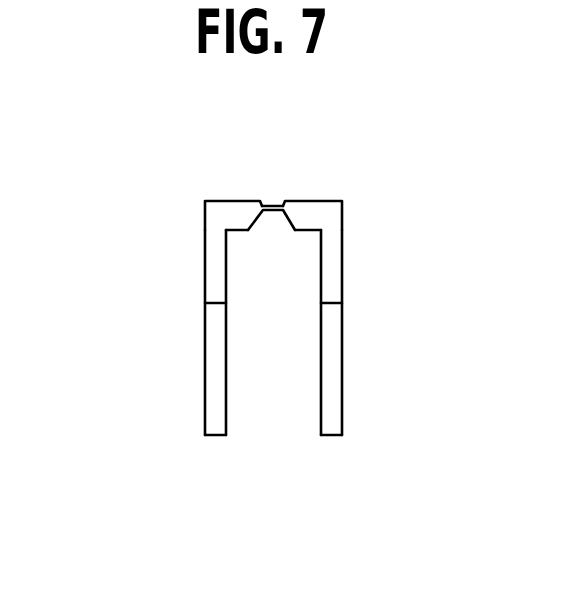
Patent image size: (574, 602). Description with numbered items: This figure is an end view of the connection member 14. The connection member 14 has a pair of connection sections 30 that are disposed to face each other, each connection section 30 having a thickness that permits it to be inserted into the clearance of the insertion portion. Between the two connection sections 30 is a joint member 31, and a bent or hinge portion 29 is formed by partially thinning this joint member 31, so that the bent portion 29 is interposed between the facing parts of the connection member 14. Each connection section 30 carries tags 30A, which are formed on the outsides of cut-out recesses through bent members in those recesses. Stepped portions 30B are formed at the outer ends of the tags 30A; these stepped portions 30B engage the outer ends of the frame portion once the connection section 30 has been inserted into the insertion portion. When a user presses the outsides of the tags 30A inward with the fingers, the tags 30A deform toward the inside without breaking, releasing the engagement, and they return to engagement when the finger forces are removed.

The connection member 14 is at (170, 216).
The bent portion 29 is at (275, 206).
The joint member 31 is at (311, 207).
The connection section 30 is at (192, 334).
The tag 30A is at (216, 425).
The stepped portion 30B is at (215, 303).